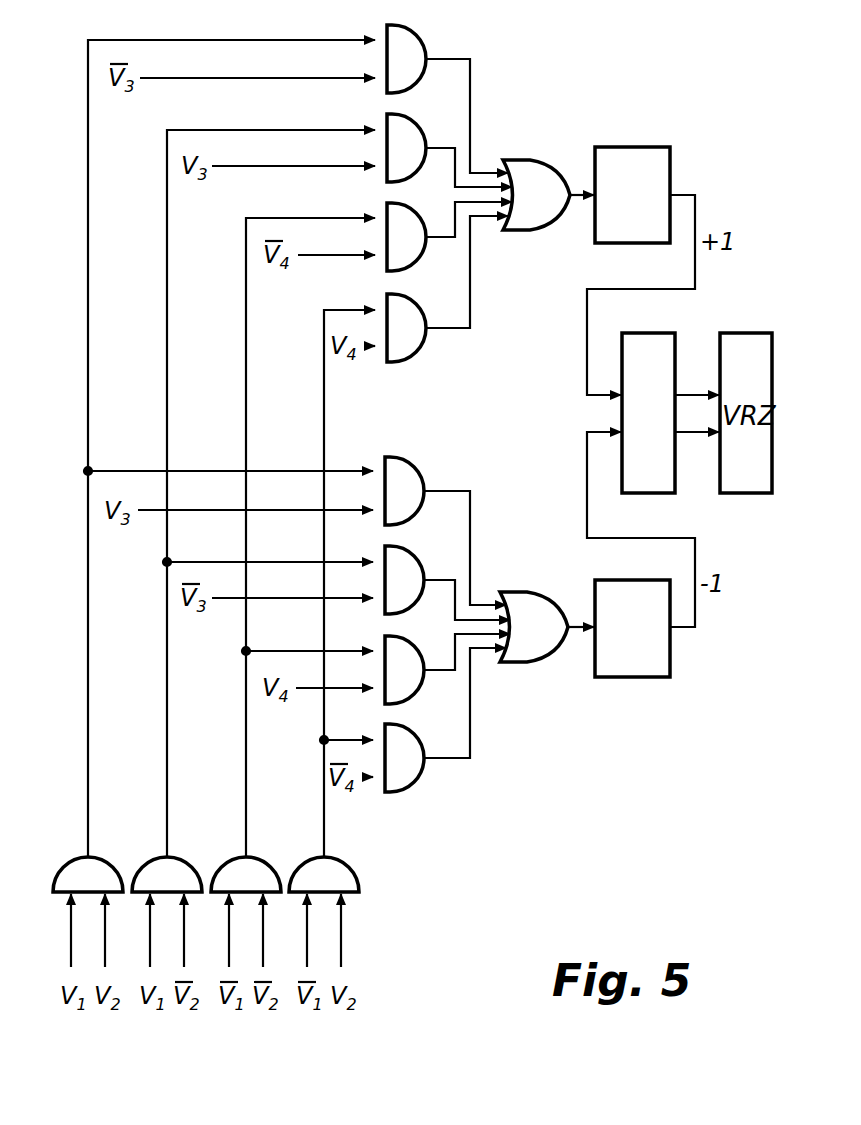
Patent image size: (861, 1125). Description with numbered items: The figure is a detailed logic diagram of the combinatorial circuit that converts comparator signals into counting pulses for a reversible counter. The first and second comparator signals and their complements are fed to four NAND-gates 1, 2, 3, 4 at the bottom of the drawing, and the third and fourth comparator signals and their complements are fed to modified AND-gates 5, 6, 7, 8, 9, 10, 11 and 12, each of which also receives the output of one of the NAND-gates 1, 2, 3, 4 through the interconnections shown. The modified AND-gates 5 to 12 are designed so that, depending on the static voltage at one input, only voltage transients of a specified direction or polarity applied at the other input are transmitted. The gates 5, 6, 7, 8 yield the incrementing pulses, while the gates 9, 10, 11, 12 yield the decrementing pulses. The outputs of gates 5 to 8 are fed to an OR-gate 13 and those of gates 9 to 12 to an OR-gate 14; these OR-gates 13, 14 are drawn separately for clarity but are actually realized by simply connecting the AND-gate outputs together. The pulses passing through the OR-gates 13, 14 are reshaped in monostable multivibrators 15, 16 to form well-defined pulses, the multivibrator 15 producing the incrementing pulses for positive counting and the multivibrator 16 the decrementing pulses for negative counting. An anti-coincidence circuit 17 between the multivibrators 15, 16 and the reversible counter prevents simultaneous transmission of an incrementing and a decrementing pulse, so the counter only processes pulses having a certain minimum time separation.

The NAND-gate 1 is at (98, 872).
The NAND-gate 2 is at (183, 872).
The NAND-gate 3 is at (258, 872).
The NAND-gate 4 is at (333, 872).
The modified AND-gate 5 is at (412, 43).
The modified AND-gate 6 is at (410, 133).
The modified AND-gate 7 is at (407, 223).
The modified AND-gate 8 is at (406, 314).
The modified AND-gate 9 is at (408, 478).
The modified AND-gate 10 is at (406, 566).
The modified AND-gate 11 is at (405, 656).
The modified AND-gate 12 is at (405, 746).
The OR-gate 13 is at (535, 173).
The OR-gate 14 is at (540, 643).
The monostable multivibrator 15 is at (625, 165).
The monostable multivibrator 16 is at (622, 665).
The anti-coincidence circuit 17 is at (637, 353).